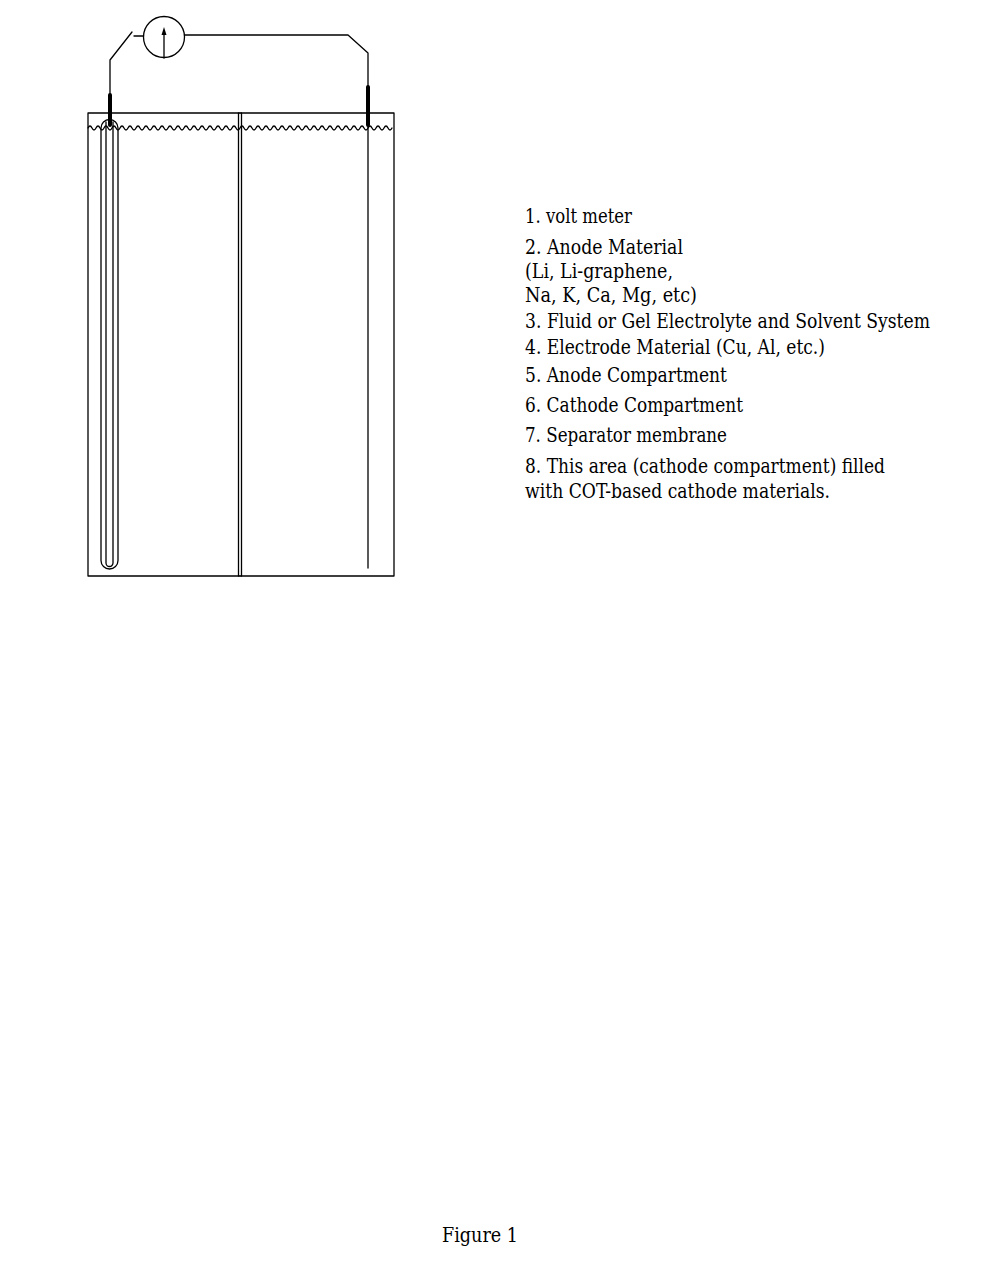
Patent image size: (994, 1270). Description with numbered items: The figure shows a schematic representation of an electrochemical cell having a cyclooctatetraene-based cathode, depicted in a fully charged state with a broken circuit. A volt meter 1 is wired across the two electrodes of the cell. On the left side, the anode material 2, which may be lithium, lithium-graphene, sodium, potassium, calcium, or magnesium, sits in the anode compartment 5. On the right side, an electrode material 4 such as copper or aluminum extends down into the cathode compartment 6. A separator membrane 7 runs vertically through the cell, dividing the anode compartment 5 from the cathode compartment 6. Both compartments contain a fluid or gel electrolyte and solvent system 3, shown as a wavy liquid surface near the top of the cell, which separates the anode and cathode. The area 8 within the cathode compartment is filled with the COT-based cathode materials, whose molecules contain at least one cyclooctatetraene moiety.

The volt meter 1 is at (138, 27).
The anode material 2 is at (86, 179).
The fluid or gel electrolyte and solvent system 3 is at (270, 117).
The electrode material 4 is at (125, 180).
The anode compartment 5 is at (187, 566).
The cathode compartment 6 is at (322, 561).
The separator membrane 7 is at (242, 586).
The cathode compartment area filled with COT-based cathode materials 8 is at (320, 310).